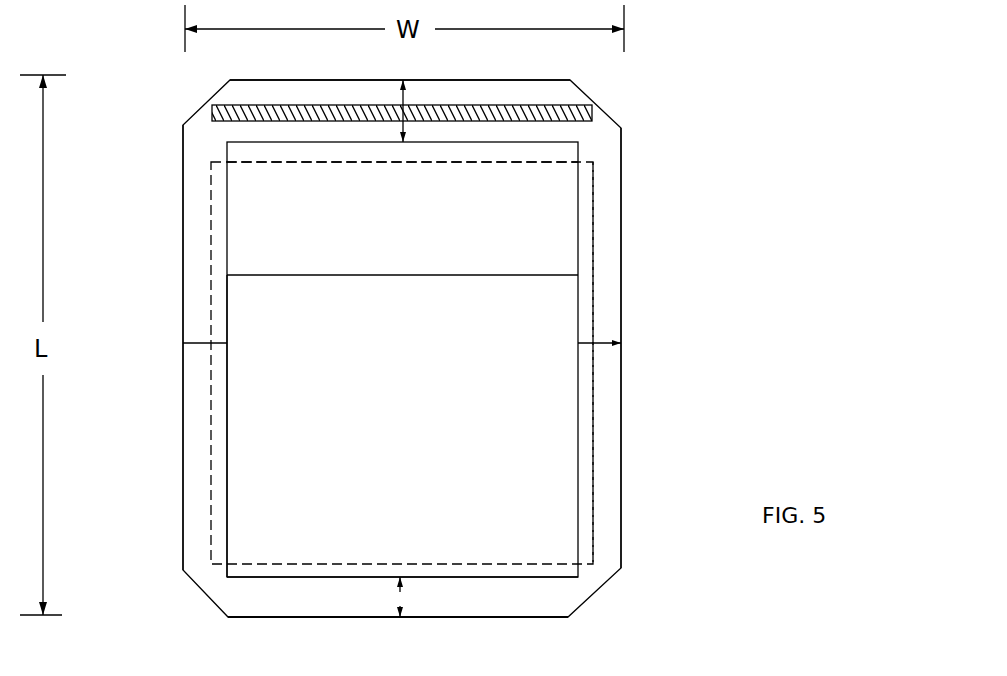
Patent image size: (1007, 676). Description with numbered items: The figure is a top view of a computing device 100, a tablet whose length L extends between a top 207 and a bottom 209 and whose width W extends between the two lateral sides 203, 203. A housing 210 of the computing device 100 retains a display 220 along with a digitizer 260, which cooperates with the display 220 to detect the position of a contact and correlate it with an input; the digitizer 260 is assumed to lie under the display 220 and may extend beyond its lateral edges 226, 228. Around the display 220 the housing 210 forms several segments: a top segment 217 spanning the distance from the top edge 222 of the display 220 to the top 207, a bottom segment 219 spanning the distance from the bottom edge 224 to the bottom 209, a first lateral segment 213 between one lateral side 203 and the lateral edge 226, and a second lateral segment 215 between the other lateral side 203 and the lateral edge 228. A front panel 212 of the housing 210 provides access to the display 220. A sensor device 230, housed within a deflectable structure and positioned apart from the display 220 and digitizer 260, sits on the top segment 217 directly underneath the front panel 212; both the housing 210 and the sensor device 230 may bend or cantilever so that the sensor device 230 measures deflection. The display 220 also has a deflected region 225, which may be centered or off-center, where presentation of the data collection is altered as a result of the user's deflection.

The computing device 100 is at (628, 80).
The lateral sides 203 is at (183, 283).
The top 207 is at (508, 79).
The bottom 209 is at (478, 618).
The housing 210 is at (626, 180).
The front panel 212 is at (548, 604).
The first lateral segment 213 is at (600, 348).
The second lateral segment 215 is at (203, 346).
The top segment 217 is at (406, 111).
The bottom segment 219 is at (400, 597).
The display 220 is at (498, 543).
The top edge 222 is at (402, 154).
The bottom edge 224 is at (378, 576).
The deflected region 225 is at (277, 224).
The lateral edge 226 is at (588, 418).
The lateral edge 228 is at (228, 398).
The sensor device 230 is at (332, 106).
The digitizer 260 is at (591, 257).